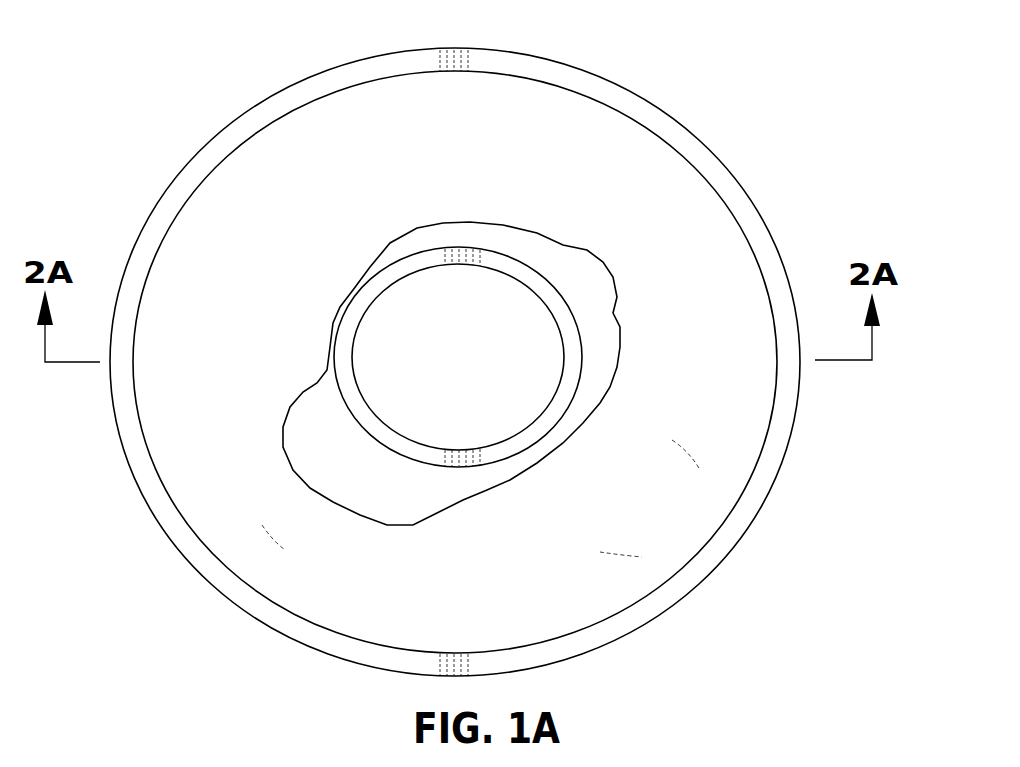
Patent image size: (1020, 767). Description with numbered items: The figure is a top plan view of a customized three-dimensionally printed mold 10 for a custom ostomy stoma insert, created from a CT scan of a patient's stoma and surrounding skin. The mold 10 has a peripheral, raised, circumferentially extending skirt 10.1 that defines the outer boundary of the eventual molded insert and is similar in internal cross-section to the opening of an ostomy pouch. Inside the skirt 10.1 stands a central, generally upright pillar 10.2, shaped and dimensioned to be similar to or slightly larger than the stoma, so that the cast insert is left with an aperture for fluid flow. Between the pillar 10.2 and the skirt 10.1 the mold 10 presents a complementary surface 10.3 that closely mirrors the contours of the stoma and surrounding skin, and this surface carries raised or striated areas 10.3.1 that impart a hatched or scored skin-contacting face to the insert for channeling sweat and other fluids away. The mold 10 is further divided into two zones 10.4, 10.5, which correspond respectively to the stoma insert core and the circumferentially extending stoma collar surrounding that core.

The mold 10 is at (723, 88).
The skirt 10.1 is at (728, 195).
The pillar 10.2 is at (398, 272).
The complementary surface 10.3 is at (693, 452).
The raised or striated areas 10.3.1 is at (642, 557).
The zone 10.4 is at (345, 433).
The zone 10.5 is at (272, 528).